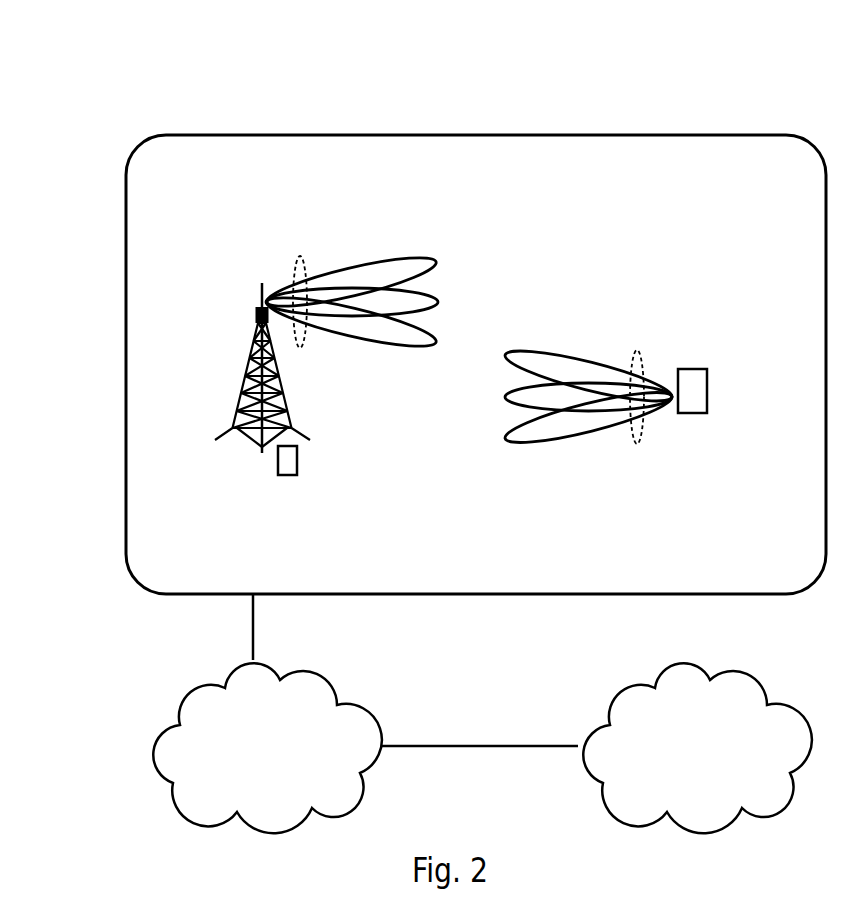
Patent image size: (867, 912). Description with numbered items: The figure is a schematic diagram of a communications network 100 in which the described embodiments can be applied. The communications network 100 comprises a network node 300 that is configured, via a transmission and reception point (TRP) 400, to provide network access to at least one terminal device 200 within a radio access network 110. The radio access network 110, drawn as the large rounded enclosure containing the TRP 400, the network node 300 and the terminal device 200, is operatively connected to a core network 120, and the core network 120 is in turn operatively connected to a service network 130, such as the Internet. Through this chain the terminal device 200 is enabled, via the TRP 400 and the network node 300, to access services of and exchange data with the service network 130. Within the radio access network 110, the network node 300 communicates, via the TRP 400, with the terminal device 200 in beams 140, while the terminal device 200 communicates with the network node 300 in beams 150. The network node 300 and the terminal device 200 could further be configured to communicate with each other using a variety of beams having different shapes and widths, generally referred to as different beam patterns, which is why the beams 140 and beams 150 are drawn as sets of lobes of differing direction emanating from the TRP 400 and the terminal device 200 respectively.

The communications network 100 is at (214, 61).
The radio access network 110 is at (126, 493).
The core network 120 is at (292, 765).
The service network 130 is at (722, 765).
The beams 140 is at (302, 256).
The beams 150 is at (637, 350).
The terminal device 200 is at (690, 414).
The network node 300 is at (278, 466).
The transmission and reception point (TRP) 400 is at (258, 300).